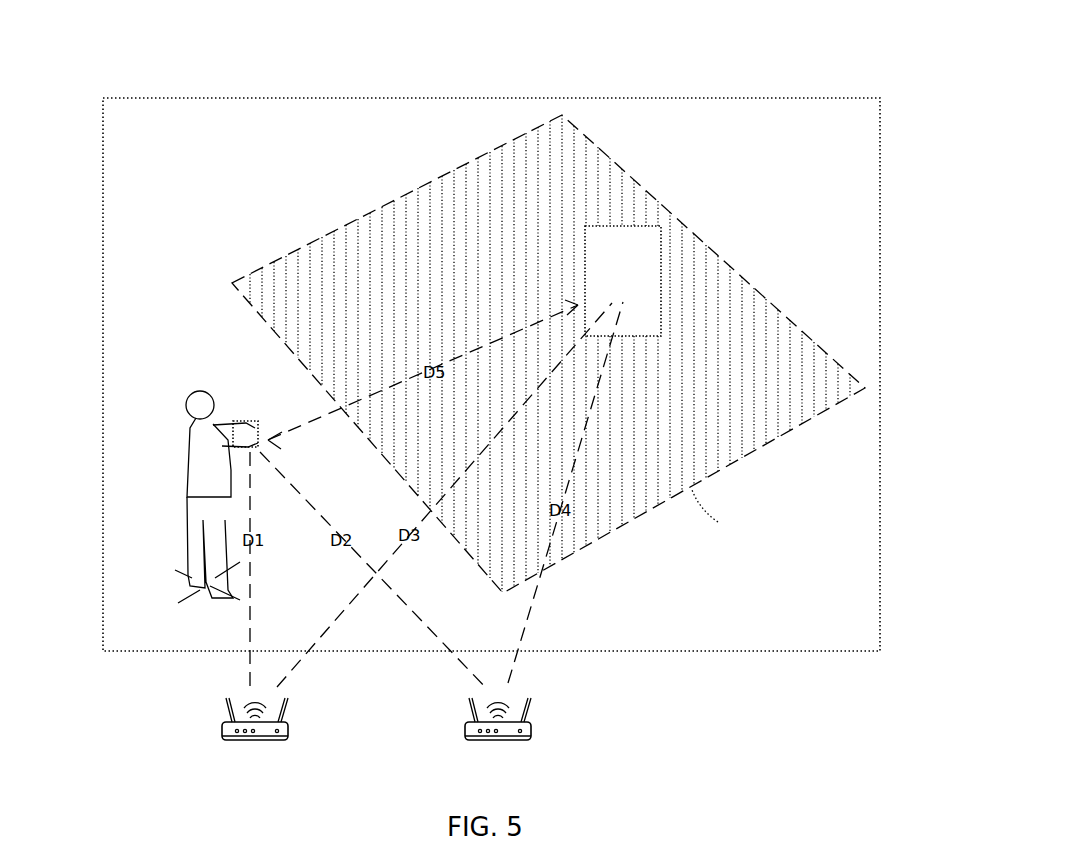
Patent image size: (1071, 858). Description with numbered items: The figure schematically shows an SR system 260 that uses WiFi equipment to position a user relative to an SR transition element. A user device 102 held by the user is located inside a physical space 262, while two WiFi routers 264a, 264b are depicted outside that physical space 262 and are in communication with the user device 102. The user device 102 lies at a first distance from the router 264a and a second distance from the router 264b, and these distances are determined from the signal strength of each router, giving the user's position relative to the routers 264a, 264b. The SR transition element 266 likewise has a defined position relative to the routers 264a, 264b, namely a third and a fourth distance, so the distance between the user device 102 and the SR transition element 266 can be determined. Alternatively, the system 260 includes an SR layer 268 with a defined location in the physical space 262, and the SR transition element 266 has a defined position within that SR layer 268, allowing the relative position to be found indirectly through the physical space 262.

The SR system 260 is at (835, 84).
The physical space 262 is at (168, 98).
The SR transition element 266 is at (663, 226).
The SR layer 268 is at (790, 318).
The user device 102 is at (233, 421).
The WiFi router 264a is at (236, 742).
The WiFi router 264b is at (477, 742).